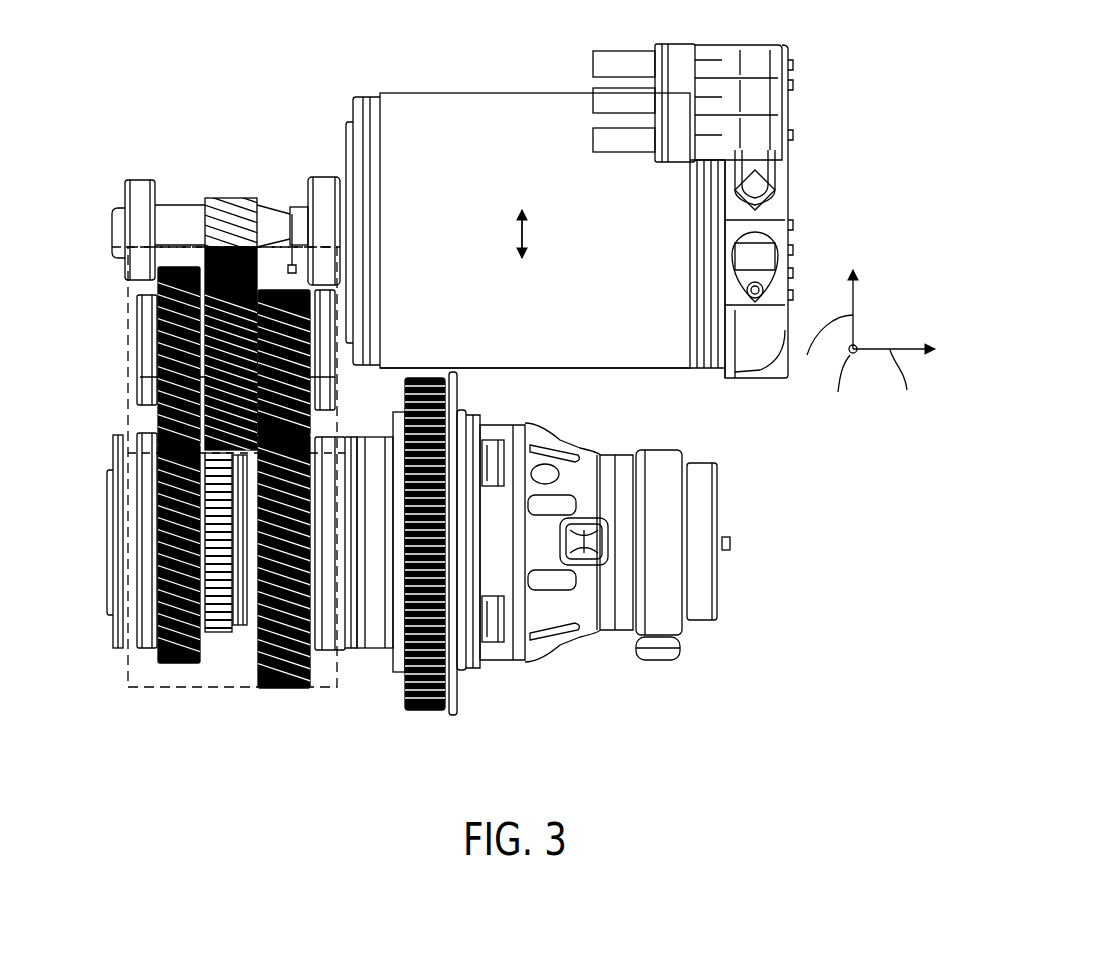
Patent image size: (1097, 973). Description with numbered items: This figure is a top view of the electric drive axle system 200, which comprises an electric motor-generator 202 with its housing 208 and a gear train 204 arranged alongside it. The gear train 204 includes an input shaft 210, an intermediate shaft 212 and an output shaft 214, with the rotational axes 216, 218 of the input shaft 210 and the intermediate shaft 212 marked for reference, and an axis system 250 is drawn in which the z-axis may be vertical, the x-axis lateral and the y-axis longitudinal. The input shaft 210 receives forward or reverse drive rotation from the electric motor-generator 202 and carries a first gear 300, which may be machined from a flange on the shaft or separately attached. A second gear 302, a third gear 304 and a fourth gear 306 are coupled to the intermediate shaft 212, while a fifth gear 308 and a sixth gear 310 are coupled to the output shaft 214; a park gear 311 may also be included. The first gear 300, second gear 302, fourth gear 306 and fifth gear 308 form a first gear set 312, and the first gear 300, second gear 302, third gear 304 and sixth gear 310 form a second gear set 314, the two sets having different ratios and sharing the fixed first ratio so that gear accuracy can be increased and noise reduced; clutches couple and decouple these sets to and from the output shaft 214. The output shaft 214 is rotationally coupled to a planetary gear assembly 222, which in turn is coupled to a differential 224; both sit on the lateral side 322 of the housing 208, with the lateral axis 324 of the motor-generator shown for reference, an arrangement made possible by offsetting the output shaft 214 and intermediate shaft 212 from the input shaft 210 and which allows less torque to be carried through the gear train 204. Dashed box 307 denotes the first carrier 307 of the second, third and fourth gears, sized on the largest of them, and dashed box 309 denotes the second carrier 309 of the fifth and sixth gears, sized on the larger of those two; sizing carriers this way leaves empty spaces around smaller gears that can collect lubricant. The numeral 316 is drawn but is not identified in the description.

The electric drive axle system 200 is at (133, 96).
The electric motor-generator 202 is at (840, 152).
The gear train 204 is at (206, 104).
The housing 208 is at (675, 370).
The input shaft 210 is at (182, 197).
The intermediate shaft 212 is at (108, 377).
The output shaft 214 is at (100, 522).
The rotational axis of the input shaft 216 is at (66, 232).
The rotational axis of the intermediate shaft 218 is at (92, 350).
The planetary gear assembly 222 is at (427, 722).
The differential 224 is at (553, 655).
The axis system 250 is at (903, 300).
The first gear 300 is at (232, 196).
The second gear 302 is at (230, 318).
The third gear 304 is at (180, 356).
The fourth gear 306 is at (285, 362).
The first carrier 307 is at (292, 245).
The fifth gear 308 is at (285, 561).
The second carrier 309 is at (135, 689).
The sixth gear 310 is at (180, 554).
The park gear 311 is at (221, 648).
The first gear set 312 is at (290, 700).
The second gear set 314 is at (181, 700).
The bearing 316 is at (238, 748).
The lateral side 322 is at (598, 378).
The lateral axis 324 is at (528, 235).